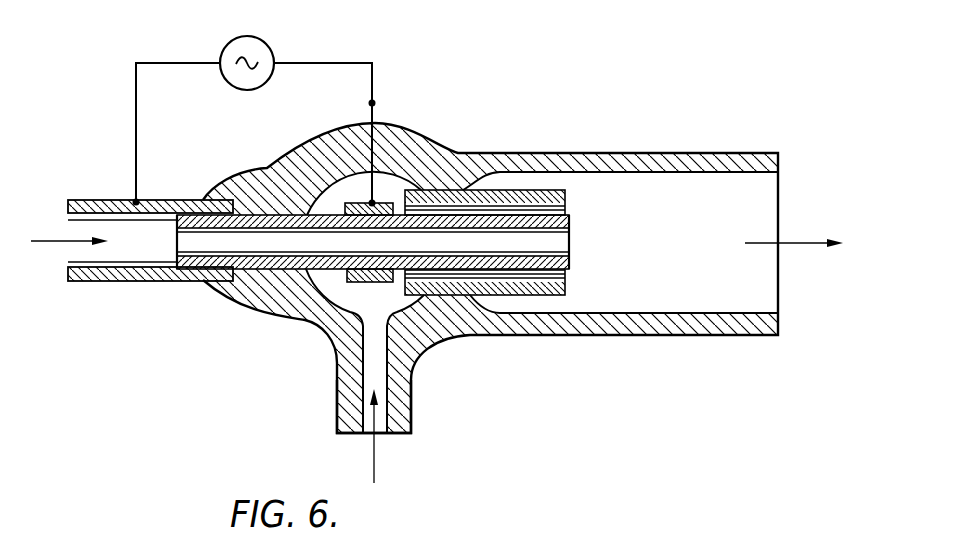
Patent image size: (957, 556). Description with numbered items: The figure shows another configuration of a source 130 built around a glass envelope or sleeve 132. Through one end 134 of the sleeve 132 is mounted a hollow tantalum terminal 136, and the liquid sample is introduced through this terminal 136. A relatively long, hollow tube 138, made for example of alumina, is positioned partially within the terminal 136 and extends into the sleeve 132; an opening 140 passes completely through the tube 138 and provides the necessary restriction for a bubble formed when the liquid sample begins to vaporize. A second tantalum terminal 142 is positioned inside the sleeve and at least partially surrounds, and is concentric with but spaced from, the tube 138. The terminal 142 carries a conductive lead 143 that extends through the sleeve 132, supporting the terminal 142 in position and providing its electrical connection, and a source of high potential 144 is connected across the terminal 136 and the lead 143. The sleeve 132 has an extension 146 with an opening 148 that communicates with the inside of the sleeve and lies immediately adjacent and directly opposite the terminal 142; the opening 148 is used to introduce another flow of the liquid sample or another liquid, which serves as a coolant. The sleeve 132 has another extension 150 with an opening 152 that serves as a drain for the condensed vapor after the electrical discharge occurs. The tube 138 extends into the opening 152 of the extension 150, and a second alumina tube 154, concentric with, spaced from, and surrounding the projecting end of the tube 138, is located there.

The source 130 is at (443, 253).
The glass envelope or sleeve 132 is at (458, 152).
The end of sleeve 134 is at (298, 318).
The hollow tantalum terminal 136 is at (123, 281).
The hollow tube 138 is at (188, 202).
The opening 140 is at (182, 238).
The second tantalum terminal 142 is at (381, 201).
The conductive lead 143 is at (373, 103).
The source of high potential 144 is at (264, 46).
The extension 146 is at (413, 377).
The opening 148 is at (367, 425).
The extension 150 is at (675, 158).
The opening 152 is at (768, 208).
The second alumina tube 154 is at (566, 193).